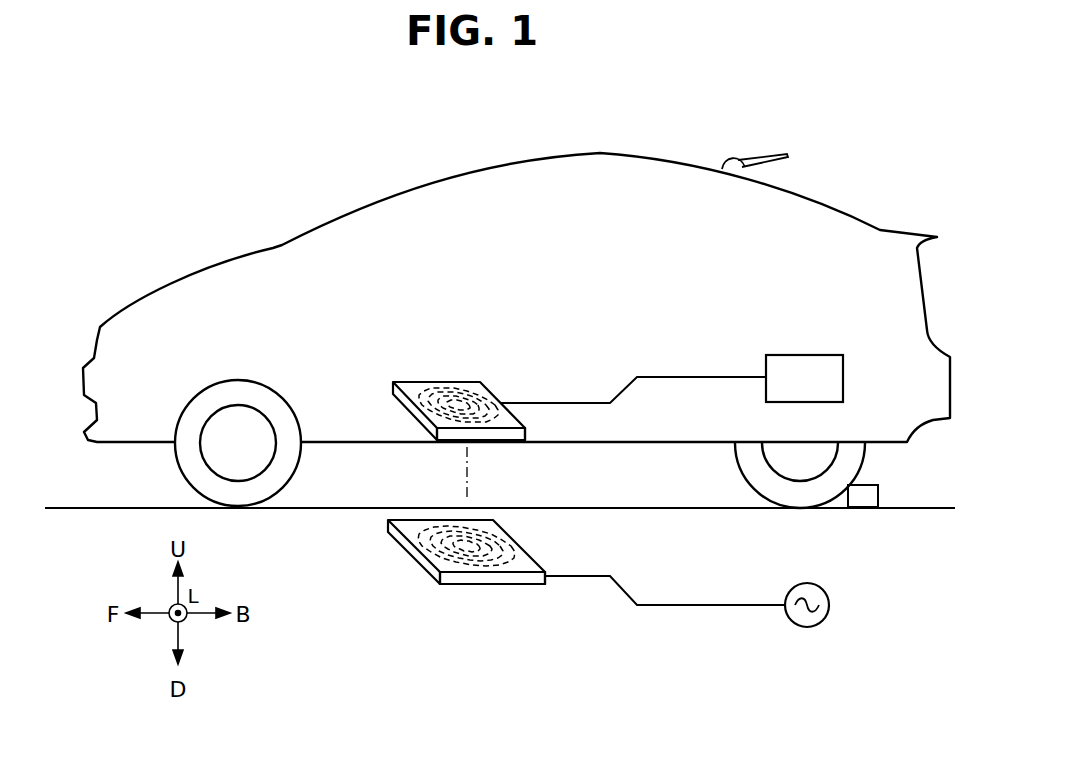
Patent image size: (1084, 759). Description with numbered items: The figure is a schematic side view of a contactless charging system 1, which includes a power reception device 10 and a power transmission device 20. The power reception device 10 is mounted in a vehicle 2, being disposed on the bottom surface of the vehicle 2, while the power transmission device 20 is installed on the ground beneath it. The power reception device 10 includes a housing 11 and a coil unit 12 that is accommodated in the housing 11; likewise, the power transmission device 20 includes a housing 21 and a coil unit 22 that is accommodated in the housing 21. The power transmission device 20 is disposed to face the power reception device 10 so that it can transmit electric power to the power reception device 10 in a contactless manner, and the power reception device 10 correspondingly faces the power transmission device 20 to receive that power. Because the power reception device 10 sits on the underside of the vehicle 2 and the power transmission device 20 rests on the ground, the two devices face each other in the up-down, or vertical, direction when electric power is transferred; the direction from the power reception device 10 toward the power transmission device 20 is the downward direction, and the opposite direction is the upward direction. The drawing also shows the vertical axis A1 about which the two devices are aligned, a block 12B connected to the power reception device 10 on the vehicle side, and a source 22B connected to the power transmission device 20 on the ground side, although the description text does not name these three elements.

The contactless charging system 1 is at (302, 168).
The vehicle 2 is at (563, 155).
The power reception device 10 is at (393, 317).
The housing 11 is at (415, 380).
The coil unit 12 is at (473, 383).
The battery 12B is at (808, 355).
The axis A1 is at (465, 493).
The power transmission device 20 is at (428, 664).
The housing 21 is at (452, 586).
The coil unit 22 is at (497, 563).
The AC power supply 22B is at (808, 628).